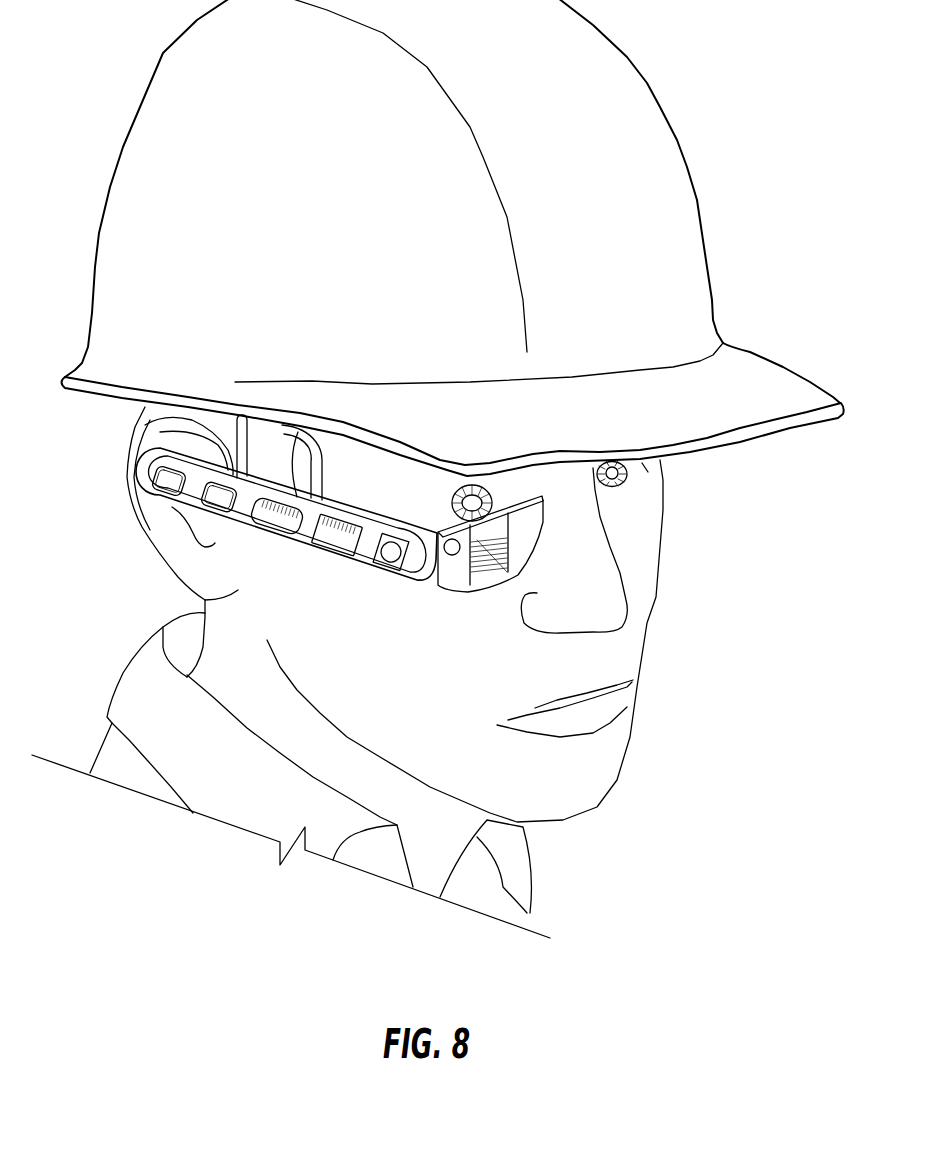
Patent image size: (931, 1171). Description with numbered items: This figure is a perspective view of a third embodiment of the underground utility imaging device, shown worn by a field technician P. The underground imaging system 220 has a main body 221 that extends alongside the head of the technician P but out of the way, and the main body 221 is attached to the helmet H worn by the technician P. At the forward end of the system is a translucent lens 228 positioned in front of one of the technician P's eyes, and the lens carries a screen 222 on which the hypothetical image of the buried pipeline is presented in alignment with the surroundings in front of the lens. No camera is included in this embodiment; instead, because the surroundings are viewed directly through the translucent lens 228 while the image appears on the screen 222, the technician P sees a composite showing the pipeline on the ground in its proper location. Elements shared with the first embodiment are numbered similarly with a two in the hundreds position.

The helmet H is at (670, 163).
The technician P is at (713, 648).
The underground imaging system 220 is at (358, 574).
The main body 221 is at (362, 514).
The screen 222 is at (497, 530).
The translucent lens 228 is at (458, 582).